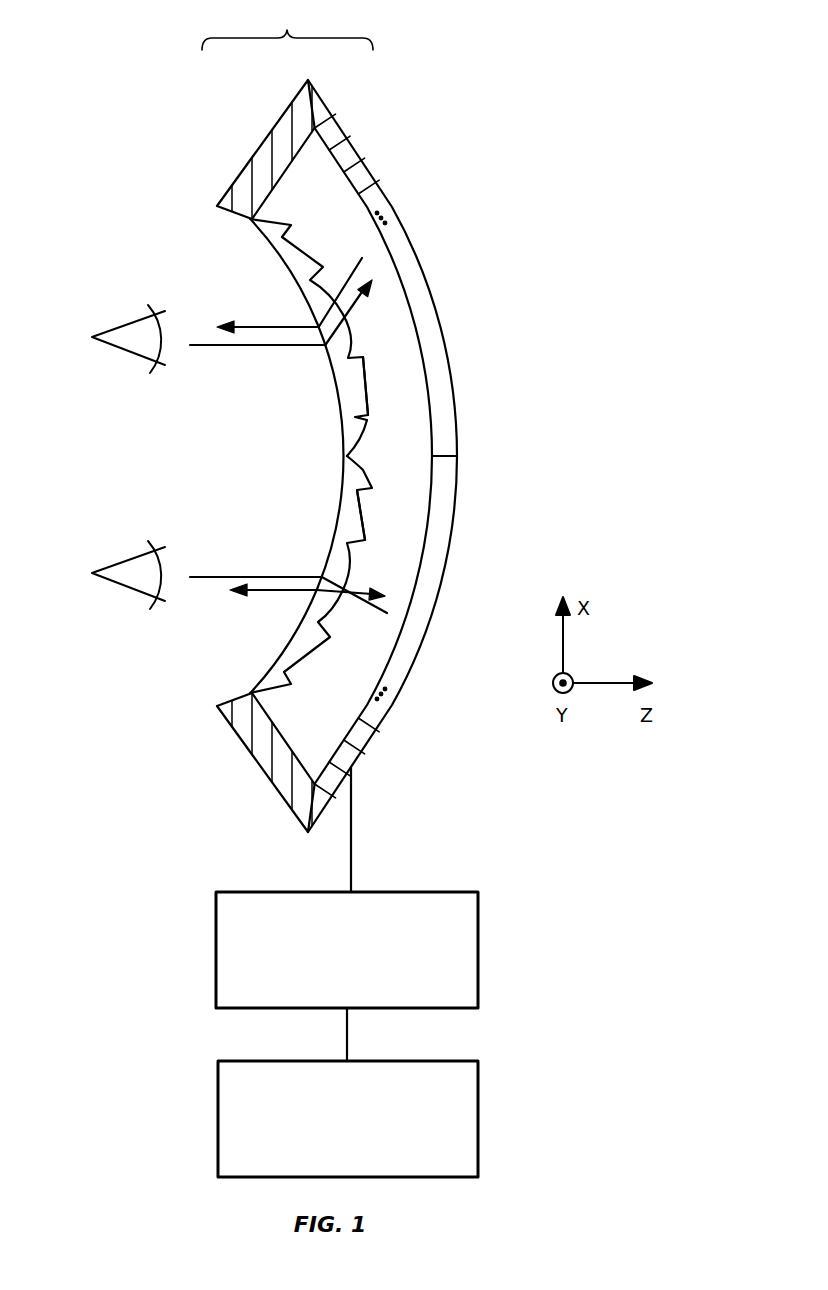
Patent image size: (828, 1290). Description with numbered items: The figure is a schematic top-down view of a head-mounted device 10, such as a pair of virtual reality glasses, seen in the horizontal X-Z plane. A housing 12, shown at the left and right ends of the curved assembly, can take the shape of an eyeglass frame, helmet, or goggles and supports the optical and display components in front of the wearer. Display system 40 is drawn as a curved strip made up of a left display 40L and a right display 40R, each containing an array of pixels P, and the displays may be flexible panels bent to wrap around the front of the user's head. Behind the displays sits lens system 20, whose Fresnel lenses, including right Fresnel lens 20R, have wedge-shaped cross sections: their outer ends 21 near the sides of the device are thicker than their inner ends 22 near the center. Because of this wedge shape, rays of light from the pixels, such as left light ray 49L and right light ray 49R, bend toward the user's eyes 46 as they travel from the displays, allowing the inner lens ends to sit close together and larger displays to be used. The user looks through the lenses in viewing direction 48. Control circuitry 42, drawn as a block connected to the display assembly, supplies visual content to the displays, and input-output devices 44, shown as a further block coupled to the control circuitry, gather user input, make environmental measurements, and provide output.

The head-mounted device 10 is at (287, 29).
The housing 12 is at (265, 158).
The lens system 20 is at (328, 430).
The right Fresnel lens 20R is at (288, 655).
The outer ends 21 is at (267, 242).
The inner ends 22 is at (365, 442).
The display system 40 is at (406, 449).
The left display 40L is at (424, 335).
The right display 40R is at (424, 589).
The pixels P is at (325, 127).
The control circuitry 42 is at (458, 948).
The input-output devices 44 is at (463, 1117).
The user's eyes 46 is at (123, 333).
The viewing direction 48 is at (230, 348).
The left light ray 49L is at (278, 329).
The right light ray 49R is at (293, 585).